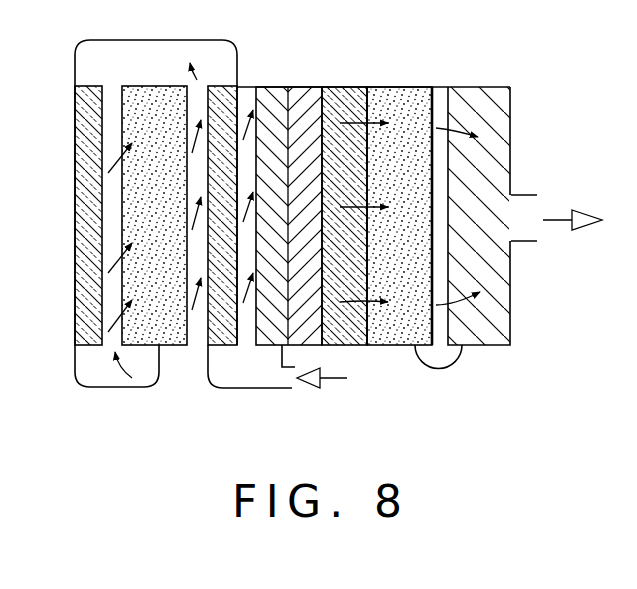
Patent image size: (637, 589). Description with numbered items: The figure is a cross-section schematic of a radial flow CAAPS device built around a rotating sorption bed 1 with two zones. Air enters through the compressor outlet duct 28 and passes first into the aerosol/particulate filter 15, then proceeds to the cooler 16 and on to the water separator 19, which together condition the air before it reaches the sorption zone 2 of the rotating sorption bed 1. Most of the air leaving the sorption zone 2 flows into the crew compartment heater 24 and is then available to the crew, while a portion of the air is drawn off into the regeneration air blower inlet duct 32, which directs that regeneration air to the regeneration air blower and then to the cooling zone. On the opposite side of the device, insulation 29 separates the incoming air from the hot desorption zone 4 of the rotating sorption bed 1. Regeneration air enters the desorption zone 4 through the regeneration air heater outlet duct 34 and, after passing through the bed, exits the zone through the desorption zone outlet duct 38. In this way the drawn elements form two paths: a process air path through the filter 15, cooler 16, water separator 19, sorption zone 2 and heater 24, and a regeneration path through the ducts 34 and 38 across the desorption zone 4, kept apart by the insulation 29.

The rotating sorption bed 1 is at (383, 352).
The sorption zone 2 is at (400, 88).
The desorption zone 4 is at (167, 320).
The aerosol/particulate filter 15 is at (270, 90).
The cooler 16 is at (310, 92).
The water separator 19 is at (348, 88).
The crew compartment heater 24 is at (512, 107).
The compressor outlet duct 28 is at (263, 388).
The insulation 29 is at (82, 195).
The regeneration air blower inlet duct 32 is at (441, 368).
The regeneration air heater outlet duct 34 is at (122, 387).
The desorption zone outlet duct 38 is at (97, 40).